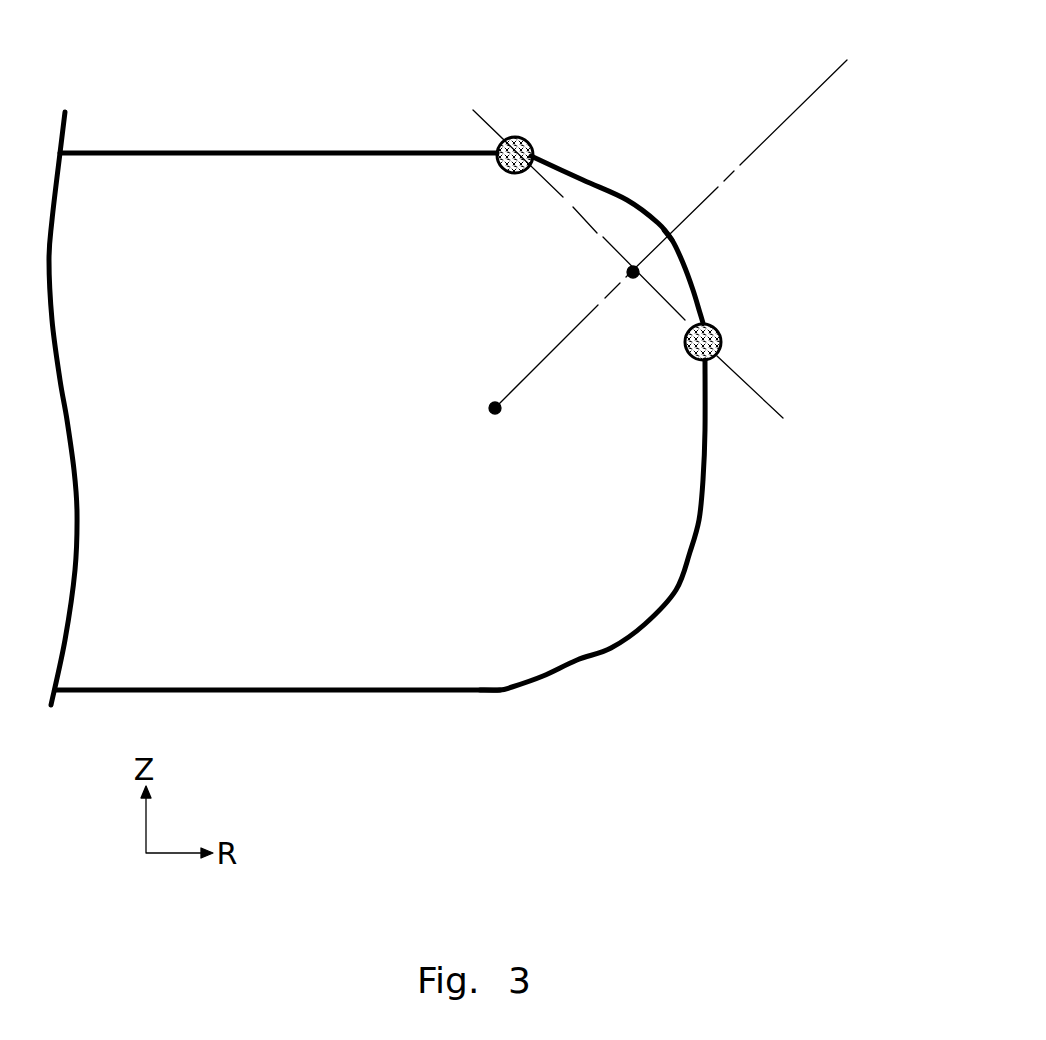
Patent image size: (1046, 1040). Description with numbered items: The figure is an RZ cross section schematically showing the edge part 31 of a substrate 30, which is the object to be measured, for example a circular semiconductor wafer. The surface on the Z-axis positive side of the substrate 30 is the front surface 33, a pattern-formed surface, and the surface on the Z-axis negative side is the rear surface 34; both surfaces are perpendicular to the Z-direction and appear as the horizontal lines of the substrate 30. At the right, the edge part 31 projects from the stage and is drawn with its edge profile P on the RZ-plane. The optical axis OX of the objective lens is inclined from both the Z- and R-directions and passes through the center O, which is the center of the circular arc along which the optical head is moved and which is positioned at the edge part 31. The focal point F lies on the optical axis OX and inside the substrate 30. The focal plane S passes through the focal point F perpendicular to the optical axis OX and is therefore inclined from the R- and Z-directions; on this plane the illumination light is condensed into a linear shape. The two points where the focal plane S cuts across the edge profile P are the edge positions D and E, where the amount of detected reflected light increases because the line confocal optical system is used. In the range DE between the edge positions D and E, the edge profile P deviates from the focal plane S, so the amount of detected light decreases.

The substrate 30 is at (99, 677).
The edge part 31 is at (572, 629).
The front surface 33 is at (183, 153).
The rear surface 34 is at (288, 696).
The edge position D is at (515, 135).
The edge position E is at (722, 333).
The range between the edge positions DE is at (610, 183).
The edge profile P is at (688, 260).
The focal point F is at (628, 273).
The center O is at (495, 408).
The focal plane S is at (770, 403).
The optical axis OX is at (838, 63).